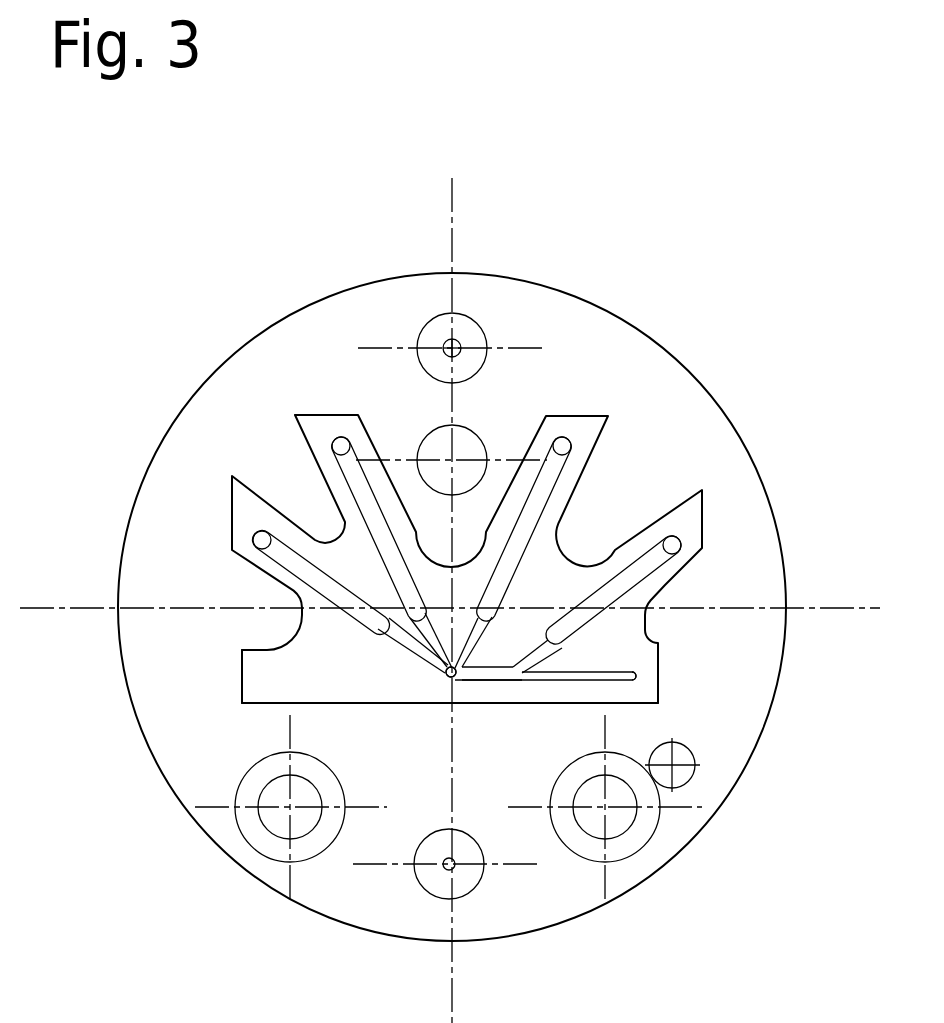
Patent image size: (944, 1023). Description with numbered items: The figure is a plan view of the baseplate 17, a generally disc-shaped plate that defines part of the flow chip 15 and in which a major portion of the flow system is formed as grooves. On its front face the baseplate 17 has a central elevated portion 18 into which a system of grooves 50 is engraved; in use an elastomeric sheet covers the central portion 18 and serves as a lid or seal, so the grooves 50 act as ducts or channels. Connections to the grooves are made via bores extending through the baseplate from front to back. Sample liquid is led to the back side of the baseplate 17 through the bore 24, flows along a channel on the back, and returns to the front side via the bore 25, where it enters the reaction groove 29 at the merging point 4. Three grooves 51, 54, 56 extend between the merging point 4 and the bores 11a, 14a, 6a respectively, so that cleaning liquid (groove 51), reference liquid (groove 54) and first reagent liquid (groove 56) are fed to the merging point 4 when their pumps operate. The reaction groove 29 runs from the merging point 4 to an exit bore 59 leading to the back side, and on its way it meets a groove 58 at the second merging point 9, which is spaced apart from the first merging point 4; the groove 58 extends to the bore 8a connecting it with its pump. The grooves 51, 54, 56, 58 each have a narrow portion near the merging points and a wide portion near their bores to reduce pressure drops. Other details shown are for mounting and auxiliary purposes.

The flow chip 15 is at (500, 207).
The baseplate 17 is at (688, 387).
The central elevated portion 18 is at (262, 690).
The merging point 4 is at (447, 678).
The second merging point 9 is at (518, 678).
The bore 24 is at (456, 868).
The bore 25 is at (470, 642).
The reaction groove 29 is at (478, 683).
The system of grooves 50 is at (404, 660).
The groove 51 is at (400, 556).
The groove 54 is at (332, 595).
The groove 56 is at (507, 568).
The groove 58 is at (600, 612).
The exit bore 59 is at (640, 676).
The bore 6a is at (563, 438).
The bore 8a is at (681, 541).
The bore 11a is at (340, 440).
The bore 14a is at (255, 535).